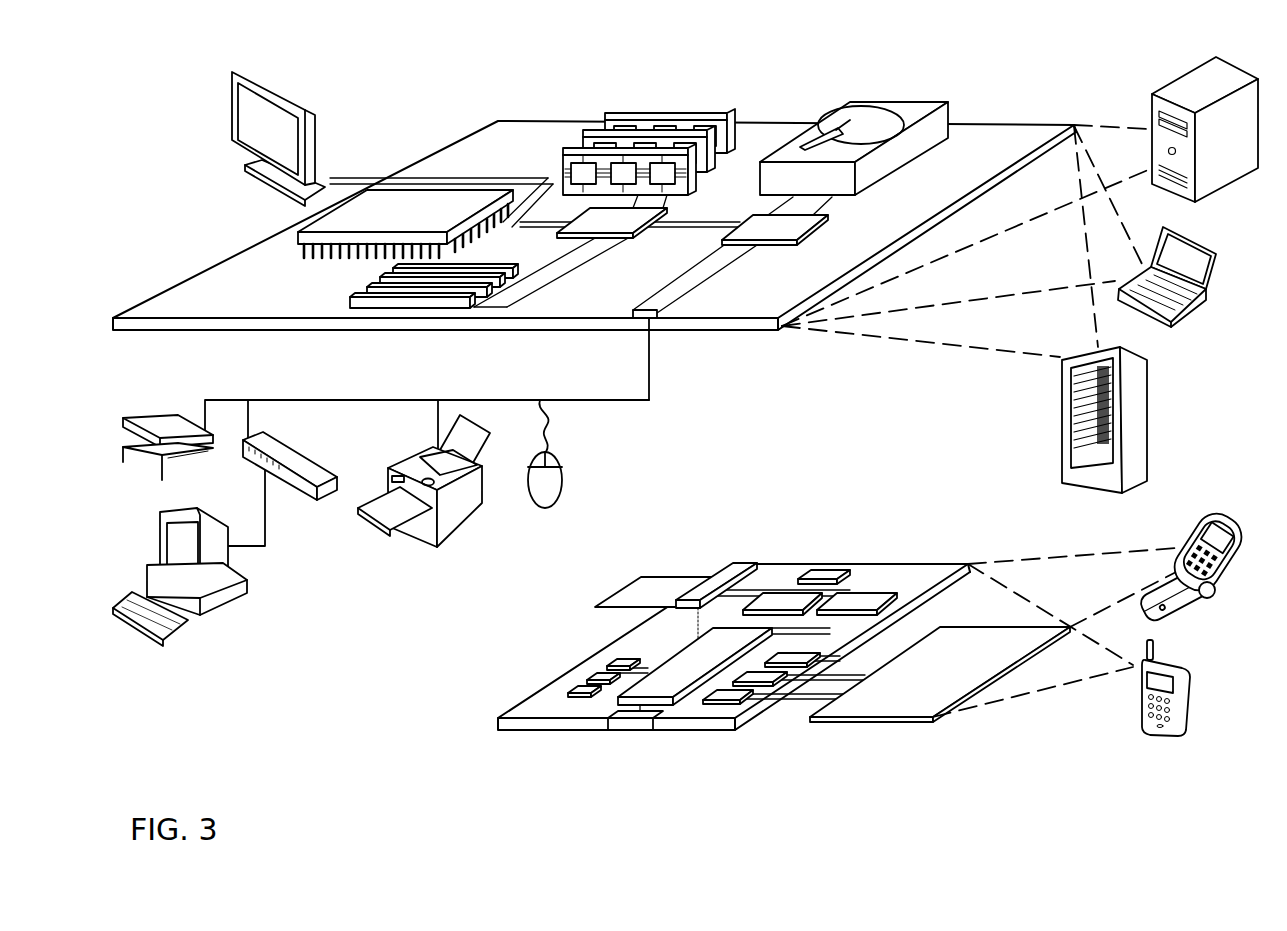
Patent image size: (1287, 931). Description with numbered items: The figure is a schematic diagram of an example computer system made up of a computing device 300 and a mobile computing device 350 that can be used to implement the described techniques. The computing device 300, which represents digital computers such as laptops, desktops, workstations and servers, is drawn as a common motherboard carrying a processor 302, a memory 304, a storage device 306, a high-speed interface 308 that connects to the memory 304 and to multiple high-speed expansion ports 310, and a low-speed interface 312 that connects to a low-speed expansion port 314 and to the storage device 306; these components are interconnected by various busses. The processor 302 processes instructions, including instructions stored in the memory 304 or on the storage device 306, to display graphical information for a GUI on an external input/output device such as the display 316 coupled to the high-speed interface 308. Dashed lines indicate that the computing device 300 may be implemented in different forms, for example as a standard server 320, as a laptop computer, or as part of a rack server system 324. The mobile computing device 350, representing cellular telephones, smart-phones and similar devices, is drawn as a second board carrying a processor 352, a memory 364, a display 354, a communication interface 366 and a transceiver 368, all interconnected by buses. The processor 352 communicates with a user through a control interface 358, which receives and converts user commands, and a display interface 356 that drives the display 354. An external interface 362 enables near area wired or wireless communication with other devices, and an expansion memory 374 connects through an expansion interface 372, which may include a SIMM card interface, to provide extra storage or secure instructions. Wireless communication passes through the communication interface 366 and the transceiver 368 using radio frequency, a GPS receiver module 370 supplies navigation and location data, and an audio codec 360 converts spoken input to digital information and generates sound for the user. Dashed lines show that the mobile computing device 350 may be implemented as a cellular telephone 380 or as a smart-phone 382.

The computing device 300 is at (421, 96).
The processor 302 is at (300, 237).
The memory 304 is at (618, 115).
The storage device 306 is at (842, 102).
The high-speed interface 308 is at (583, 217).
The high-speed expansion ports 310 is at (377, 293).
The low-speed interface 312 is at (757, 224).
The low-speed expansion port 314 is at (660, 318).
The display 316 is at (240, 73).
The standard server 320 is at (1152, 109).
The rack server system 324 is at (1062, 442).
The mobile computing device 350 is at (477, 729).
The processor 352 is at (670, 690).
The display 354 is at (898, 705).
The display interface 356 is at (743, 702).
The control interface 358 is at (767, 675).
The audio codec 360 is at (790, 655).
The external interface 362 is at (636, 718).
The memory 364 is at (573, 683).
The communication interface 366 is at (785, 600).
The transceiver 368 is at (858, 600).
The GPS receiver module 370 is at (833, 568).
The expansion interface 372 is at (717, 577).
The expansion memory 374 is at (633, 577).
The cellular telephone 380 is at (1193, 523).
The mobile phone 382 is at (1140, 700).